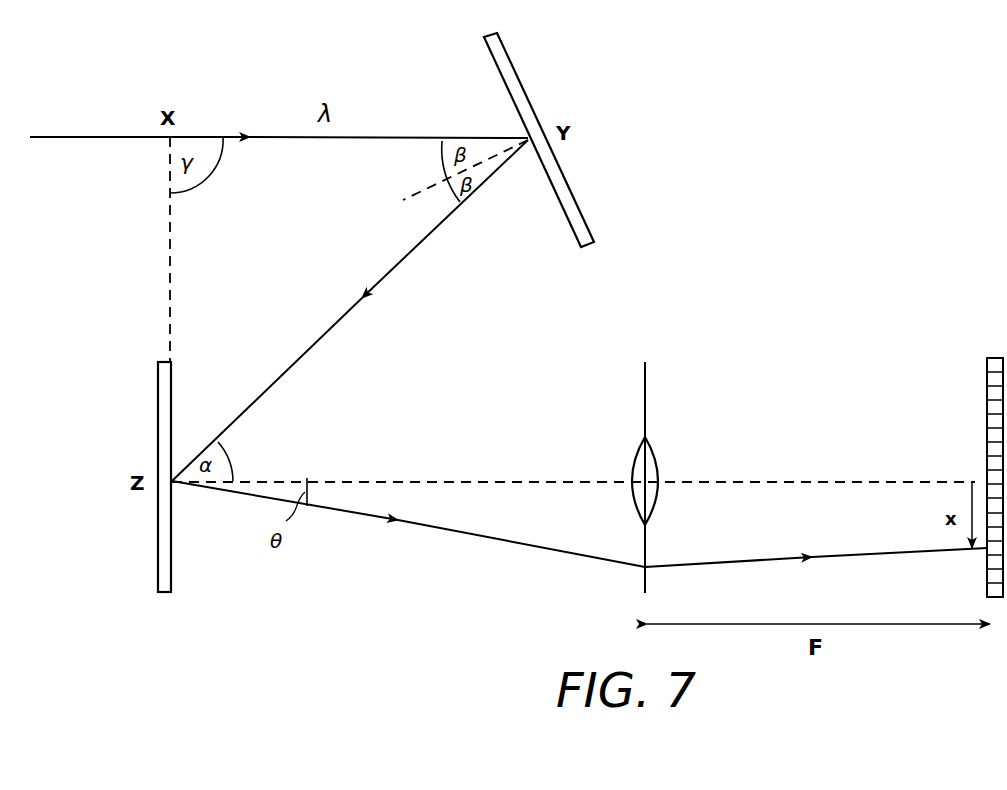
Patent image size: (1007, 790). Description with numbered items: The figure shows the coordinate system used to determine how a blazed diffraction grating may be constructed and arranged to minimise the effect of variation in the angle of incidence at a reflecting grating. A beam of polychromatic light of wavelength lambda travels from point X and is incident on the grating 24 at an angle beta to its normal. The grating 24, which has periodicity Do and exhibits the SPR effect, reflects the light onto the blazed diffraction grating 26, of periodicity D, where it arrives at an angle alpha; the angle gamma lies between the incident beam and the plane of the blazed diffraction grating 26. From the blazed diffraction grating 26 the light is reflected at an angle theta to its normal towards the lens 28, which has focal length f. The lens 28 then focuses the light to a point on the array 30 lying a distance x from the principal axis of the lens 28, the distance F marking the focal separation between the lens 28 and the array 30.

The grating 24 is at (523, 88).
The blazed diffraction grating 26 is at (158, 378).
The lens 28 is at (645, 396).
The array 30 is at (987, 396).